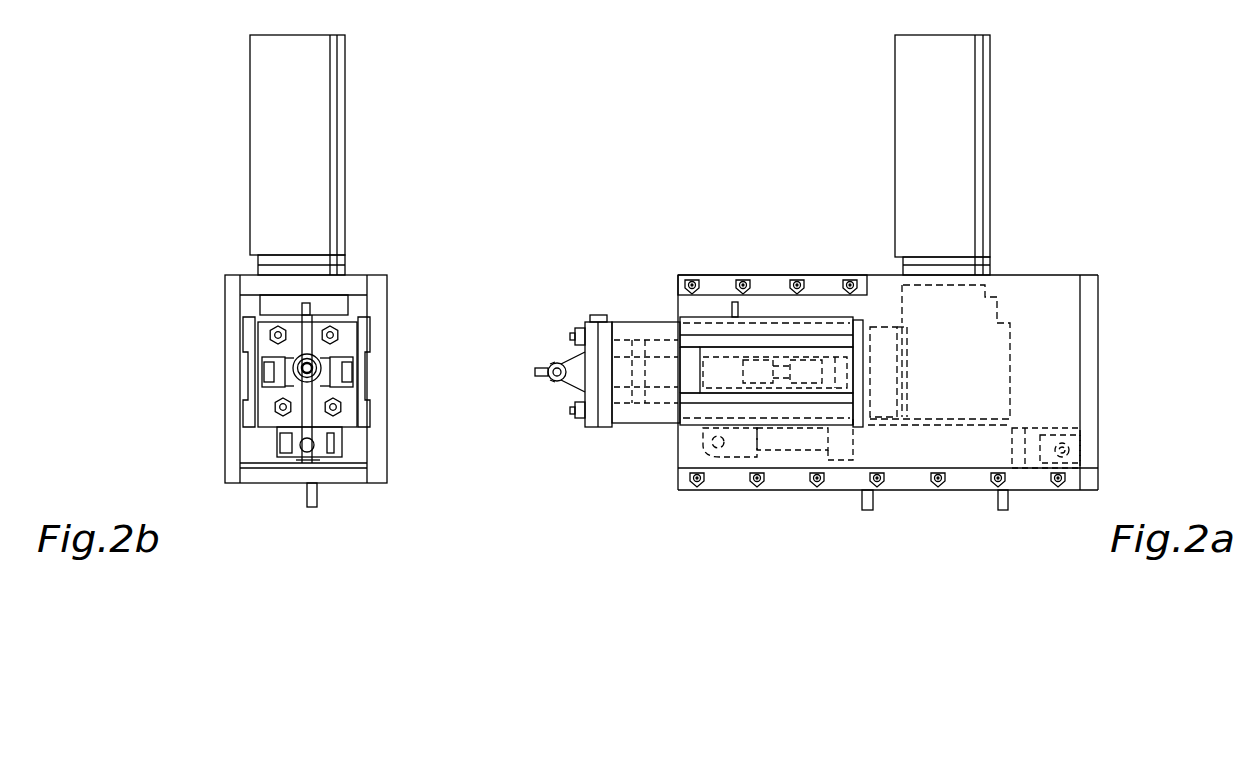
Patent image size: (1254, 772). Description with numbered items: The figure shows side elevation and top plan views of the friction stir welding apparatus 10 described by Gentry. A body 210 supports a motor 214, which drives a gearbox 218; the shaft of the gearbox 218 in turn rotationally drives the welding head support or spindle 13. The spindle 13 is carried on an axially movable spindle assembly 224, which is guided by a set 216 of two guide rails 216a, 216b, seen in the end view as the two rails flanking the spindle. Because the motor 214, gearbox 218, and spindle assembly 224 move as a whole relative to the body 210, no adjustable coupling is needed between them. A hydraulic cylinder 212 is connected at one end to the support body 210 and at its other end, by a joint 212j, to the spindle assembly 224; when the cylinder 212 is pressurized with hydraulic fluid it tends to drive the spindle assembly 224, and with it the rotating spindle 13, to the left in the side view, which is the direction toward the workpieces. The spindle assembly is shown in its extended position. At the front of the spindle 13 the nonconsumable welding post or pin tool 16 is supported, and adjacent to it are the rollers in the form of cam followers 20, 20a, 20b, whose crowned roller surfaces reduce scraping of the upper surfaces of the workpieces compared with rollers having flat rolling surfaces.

In FIG. 2b, the friction stir welding spindle assembly 10 is at (348, 515).
In FIG. 2a, the friction stir welding spindle assembly 10 is at (933, 528).
In FIG. 2a, the spindle 13 is at (613, 318).
In FIG. 2a, the pin tool 16 is at (538, 368).
In FIG. 2a, the cam follower 20 is at (553, 383).
In FIG. 2b, the cam follower 20a is at (280, 398).
In FIG. 2b, the cam follower 20b is at (338, 405).
In FIG. 2b, the body 210 is at (225, 285).
In FIG. 2a, the body 210 is at (678, 470).
In FIG. 2b, the hydraulic cylinder 212 is at (296, 463).
In FIG. 2a, the hydraulic cylinder 212 is at (1015, 423).
In FIG. 2a, the joint 212j is at (735, 457).
In FIG. 2b, the motor 214 is at (347, 108).
In FIG. 2a, the motor 214 is at (992, 108).
In FIG. 2a, the set of guide rails 216 is at (627, 345).
In FIG. 2b, the guide rail 216a is at (370, 370).
In FIG. 2b, the guide rail 216b is at (243, 368).
In FIG. 2a, the gearbox 218 is at (1012, 292).
In FIG. 2a, the spindle assembly 224 is at (630, 425).